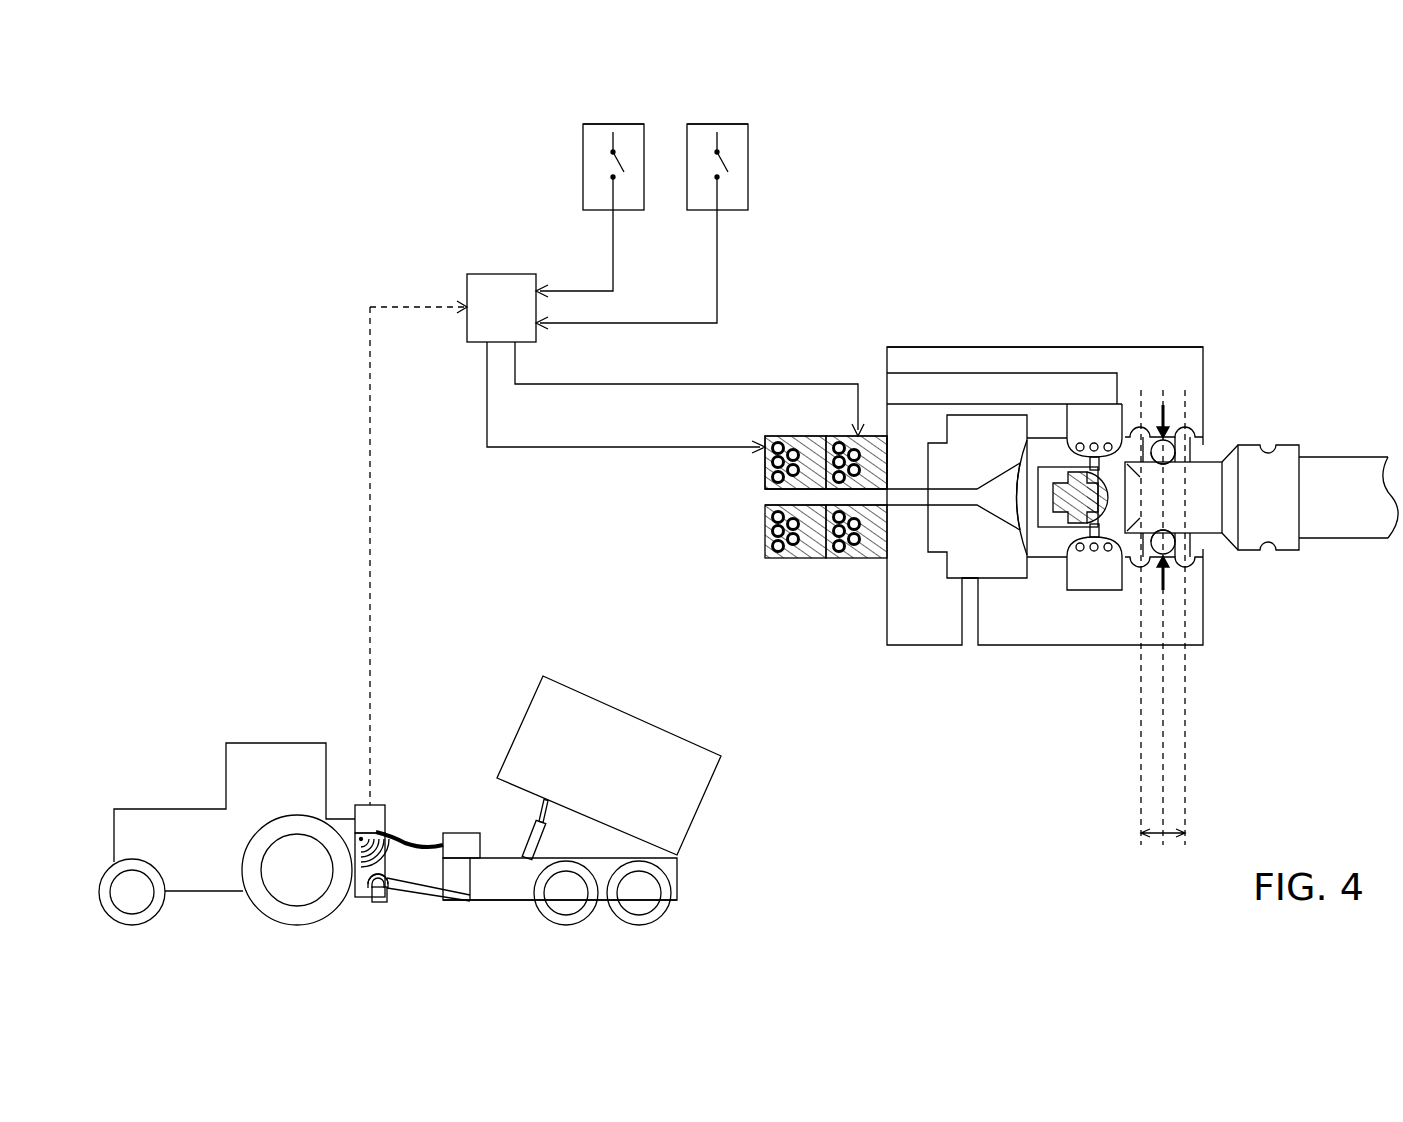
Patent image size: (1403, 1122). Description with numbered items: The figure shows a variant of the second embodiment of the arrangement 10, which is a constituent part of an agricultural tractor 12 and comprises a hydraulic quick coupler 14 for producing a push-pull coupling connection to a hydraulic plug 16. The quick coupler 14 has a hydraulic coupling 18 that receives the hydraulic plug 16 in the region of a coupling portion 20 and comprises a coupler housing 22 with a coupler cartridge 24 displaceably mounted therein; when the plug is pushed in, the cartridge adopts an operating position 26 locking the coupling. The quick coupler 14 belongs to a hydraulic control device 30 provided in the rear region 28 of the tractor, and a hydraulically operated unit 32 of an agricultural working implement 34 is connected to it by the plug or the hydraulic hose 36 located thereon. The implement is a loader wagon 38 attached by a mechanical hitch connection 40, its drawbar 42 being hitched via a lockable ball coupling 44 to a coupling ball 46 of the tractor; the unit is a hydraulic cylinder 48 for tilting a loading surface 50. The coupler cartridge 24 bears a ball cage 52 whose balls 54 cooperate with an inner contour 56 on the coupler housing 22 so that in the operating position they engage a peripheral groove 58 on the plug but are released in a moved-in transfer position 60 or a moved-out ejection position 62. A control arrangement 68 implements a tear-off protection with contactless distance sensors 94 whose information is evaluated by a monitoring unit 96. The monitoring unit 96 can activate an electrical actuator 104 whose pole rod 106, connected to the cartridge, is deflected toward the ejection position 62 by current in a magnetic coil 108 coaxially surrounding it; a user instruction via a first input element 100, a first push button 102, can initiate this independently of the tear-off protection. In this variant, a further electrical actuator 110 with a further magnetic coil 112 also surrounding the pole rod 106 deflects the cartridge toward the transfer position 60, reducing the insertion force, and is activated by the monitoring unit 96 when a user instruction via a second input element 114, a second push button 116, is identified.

The arrangement 10 is at (994, 245).
The agricultural tractor 12 is at (172, 750).
The hydraulic quick coupler 14 is at (1263, 313).
The hydraulic plug 16 is at (1300, 450).
The hydraulic coupling 18 is at (1201, 381).
The coupling portion 20 is at (1200, 480).
The coupler housing 22 is at (930, 625).
The coupler cartridge 24 is at (1046, 543).
The operating position 26 is at (1163, 757).
The rear region 28 is at (350, 790).
The hydraulic control device 30 is at (950, 345).
The hydraulically operated unit 32 is at (510, 905).
The agricultural working implement 34 is at (675, 915).
The hydraulic hose 36 is at (1347, 478).
The loader wagon 38 is at (562, 883).
The mechanical hitch connection 40 is at (351, 917).
The drawbar 42 is at (430, 890).
The lockable ball coupling 44 is at (397, 850).
The coupling ball 46 is at (375, 900).
The hydraulic cylinder 48 is at (503, 840).
The loading surface 50 is at (517, 726).
The ball cage 52 is at (1163, 392).
The balls 54 is at (1175, 442).
The inner contour 56 is at (1190, 560).
The peripheral groove 58 is at (1168, 458).
The transfer position 60 is at (1141, 787).
The ejection position 62 is at (1185, 818).
The control arrangement 68 is at (320, 245).
The contactless distance sensors 94 is at (376, 810).
The monitoring unit 96 is at (487, 274).
The first input element 100 is at (543, 103).
The first push button 102 is at (596, 124).
The electrical actuator 104 is at (760, 527).
The pole rod 106 is at (918, 490).
The magnetic coil 108 is at (797, 558).
The further electrical actuator 110 is at (855, 365).
The further magnetic coil 112 is at (862, 558).
The second input element 114 is at (783, 100).
The second push button 116 is at (702, 124).